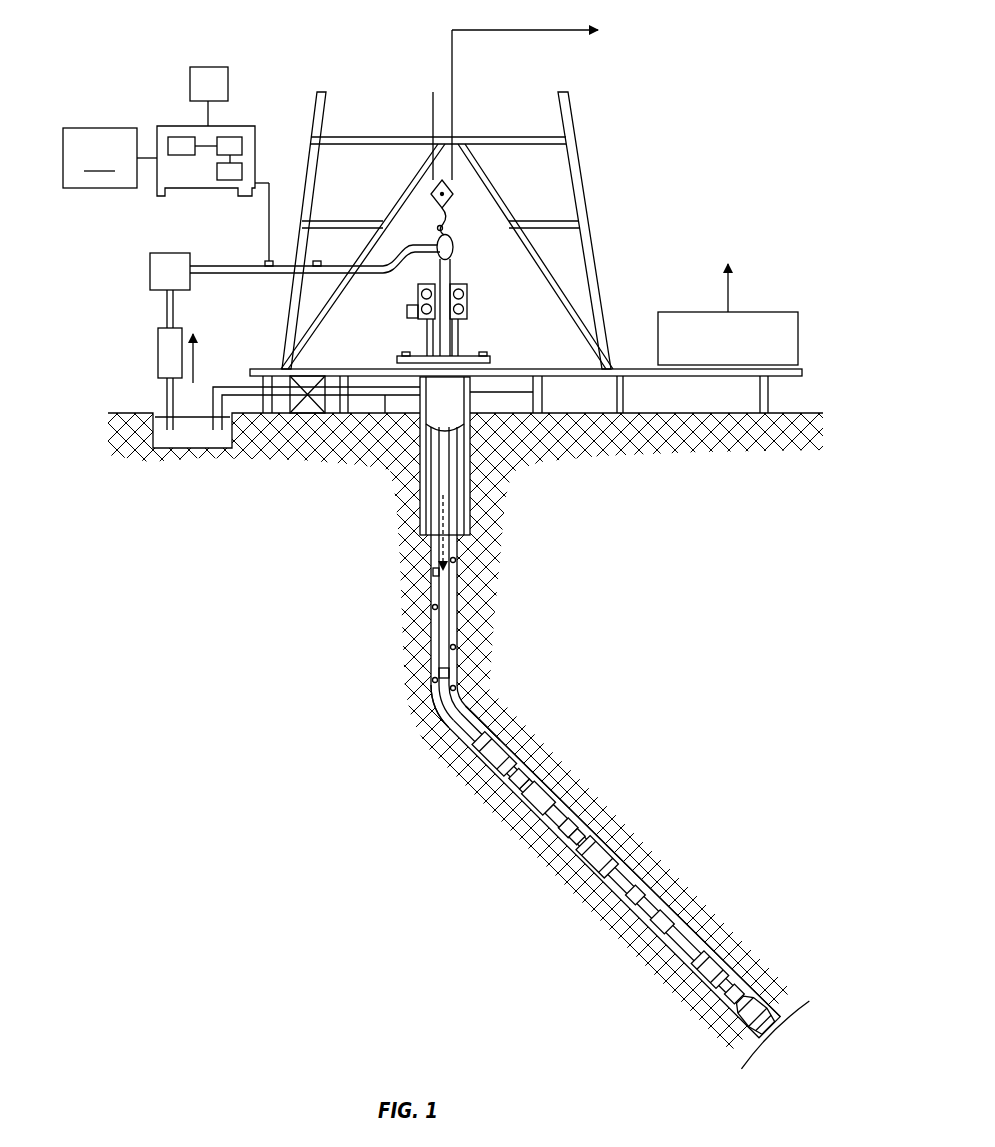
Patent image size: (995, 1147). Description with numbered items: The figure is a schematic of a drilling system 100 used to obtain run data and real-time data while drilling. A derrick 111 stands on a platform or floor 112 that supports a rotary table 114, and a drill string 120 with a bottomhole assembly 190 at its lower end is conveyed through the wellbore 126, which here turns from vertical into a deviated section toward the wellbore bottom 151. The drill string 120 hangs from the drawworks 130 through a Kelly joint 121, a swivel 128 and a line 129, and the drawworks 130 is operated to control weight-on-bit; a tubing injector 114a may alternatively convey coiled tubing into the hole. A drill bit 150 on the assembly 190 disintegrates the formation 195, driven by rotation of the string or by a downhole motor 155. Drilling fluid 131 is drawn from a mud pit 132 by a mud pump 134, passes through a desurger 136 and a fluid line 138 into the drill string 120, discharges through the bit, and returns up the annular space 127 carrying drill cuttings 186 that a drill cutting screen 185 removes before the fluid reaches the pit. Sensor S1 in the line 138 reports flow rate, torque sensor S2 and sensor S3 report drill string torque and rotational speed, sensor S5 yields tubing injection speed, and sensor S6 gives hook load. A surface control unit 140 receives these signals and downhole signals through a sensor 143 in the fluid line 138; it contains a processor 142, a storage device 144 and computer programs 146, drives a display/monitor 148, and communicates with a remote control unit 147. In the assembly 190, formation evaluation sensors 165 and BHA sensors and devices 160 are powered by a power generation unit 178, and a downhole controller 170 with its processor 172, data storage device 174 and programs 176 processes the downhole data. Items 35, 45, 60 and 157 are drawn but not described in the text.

The drilling system 100 is at (374, 36).
The wellbore 35 is at (385, 398).
The communication link 45 is at (262, 183).
The stabilizer / tool section 60 is at (610, 863).
The derrick 111 is at (592, 255).
The platform or floor 112 is at (606, 368).
The rotary table 114 is at (470, 354).
The tubing injector 114a is at (467, 302).
The drill string 120 is at (460, 627).
The Kelly joint 121 is at (440, 265).
The wellbore 126 is at (462, 702).
The annular space 127 is at (480, 728).
The swivel 128 is at (437, 243).
The line 129 is at (453, 118).
The drawworks 130 is at (765, 312).
The drilling fluid 131 is at (160, 420).
The mud pit 132 is at (190, 448).
The mud pump 134 is at (158, 355).
The desurger 136 is at (150, 262).
The fluid line 138 is at (268, 275).
The surface control unit 140 is at (195, 126).
The processor 142 is at (180, 137).
The sensor 143 is at (268, 261).
The storage device 144 is at (230, 137).
The computer programs 146 is at (228, 180).
The remote control unit 147 is at (208, 67).
The display/monitor 148 is at (110, 158).
The drill bit 150 is at (740, 1035).
The wellbore bottom 151 is at (747, 1050).
The downhole motor 155 is at (548, 793).
The wellbore wall 157 is at (738, 965).
The sensors and devices 160 is at (707, 1000).
The formation evaluation sensors 165 is at (627, 908).
The downhole controller 170 is at (500, 800).
The processor 172 is at (542, 801).
The data storage device 174 is at (556, 815).
The computer programs 176 is at (577, 837).
The power generation unit 178 is at (480, 770).
The drill cutting screen 185 is at (297, 369).
The drill cuttings 186 is at (458, 560).
The bottomhole assembly 190 is at (657, 690).
The formation 195 is at (779, 764).
The sensor S1 is at (317, 261).
The surface torque sensor S2 is at (483, 352).
The sensor S3 is at (406, 352).
The sensor S5 is at (452, 272).
The sensor S6 is at (446, 230).